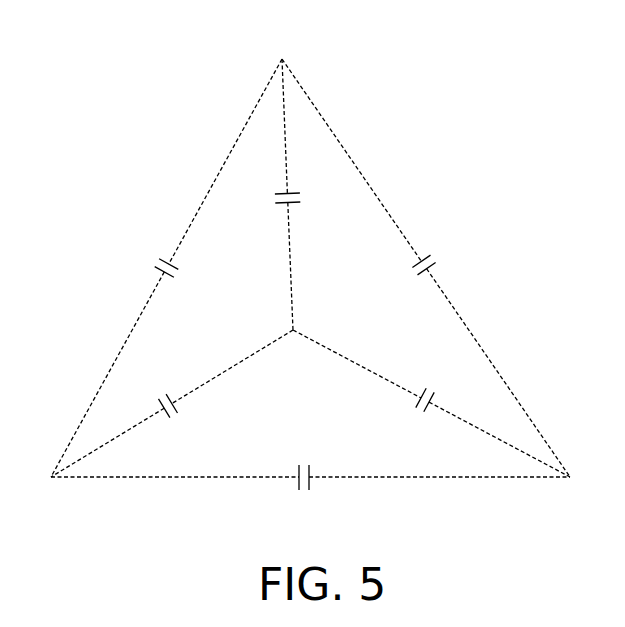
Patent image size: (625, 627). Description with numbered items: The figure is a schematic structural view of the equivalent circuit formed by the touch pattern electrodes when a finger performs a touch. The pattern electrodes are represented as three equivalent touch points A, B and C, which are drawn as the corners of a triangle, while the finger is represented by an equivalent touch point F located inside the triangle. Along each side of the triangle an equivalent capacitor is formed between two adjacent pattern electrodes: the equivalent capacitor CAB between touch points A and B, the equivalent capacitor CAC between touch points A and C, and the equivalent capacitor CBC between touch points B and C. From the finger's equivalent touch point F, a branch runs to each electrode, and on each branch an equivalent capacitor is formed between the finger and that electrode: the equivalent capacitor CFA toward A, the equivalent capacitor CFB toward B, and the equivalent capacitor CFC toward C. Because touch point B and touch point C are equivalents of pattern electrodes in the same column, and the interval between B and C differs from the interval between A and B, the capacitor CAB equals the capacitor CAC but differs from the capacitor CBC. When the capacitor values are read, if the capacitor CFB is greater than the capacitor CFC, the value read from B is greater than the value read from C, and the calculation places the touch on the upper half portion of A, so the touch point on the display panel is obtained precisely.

The touch point A is at (285, 37).
The touch point B is at (30, 483).
The touch point C is at (596, 481).
The equivalent touch point of the finger F is at (322, 319).
The equivalent capacitor CAB is at (166, 268).
The equivalent capacitor CAC is at (426, 268).
The equivalent capacitor CFA is at (306, 194).
The equivalent capacitor CFB is at (172, 403).
The equivalent capacitor CFC is at (431, 403).
The equivalent capacitor CBC is at (310, 495).